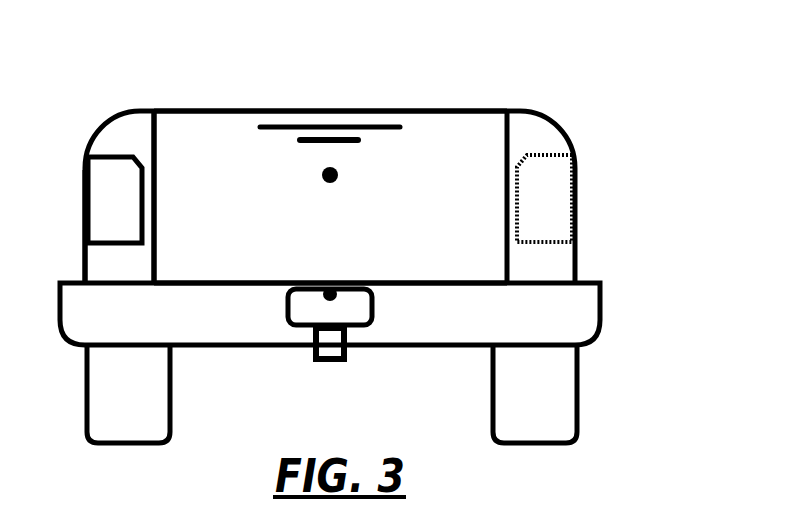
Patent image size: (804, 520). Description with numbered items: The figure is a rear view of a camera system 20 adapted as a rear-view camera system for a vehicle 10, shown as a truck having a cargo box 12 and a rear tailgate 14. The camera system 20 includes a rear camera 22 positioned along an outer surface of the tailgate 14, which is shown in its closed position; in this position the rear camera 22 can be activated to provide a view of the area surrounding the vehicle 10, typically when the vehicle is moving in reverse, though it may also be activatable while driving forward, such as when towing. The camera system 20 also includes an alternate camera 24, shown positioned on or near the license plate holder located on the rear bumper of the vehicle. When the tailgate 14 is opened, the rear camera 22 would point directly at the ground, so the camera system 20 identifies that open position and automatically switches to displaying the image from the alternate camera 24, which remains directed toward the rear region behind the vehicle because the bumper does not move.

The vehicle 10 is at (582, 101).
The cargo box 12 is at (140, 133).
The rear tailgate 14 is at (430, 143).
The camera system 20 is at (272, 87).
The rear camera 22 is at (329, 168).
The alternate camera 24 is at (330, 290).